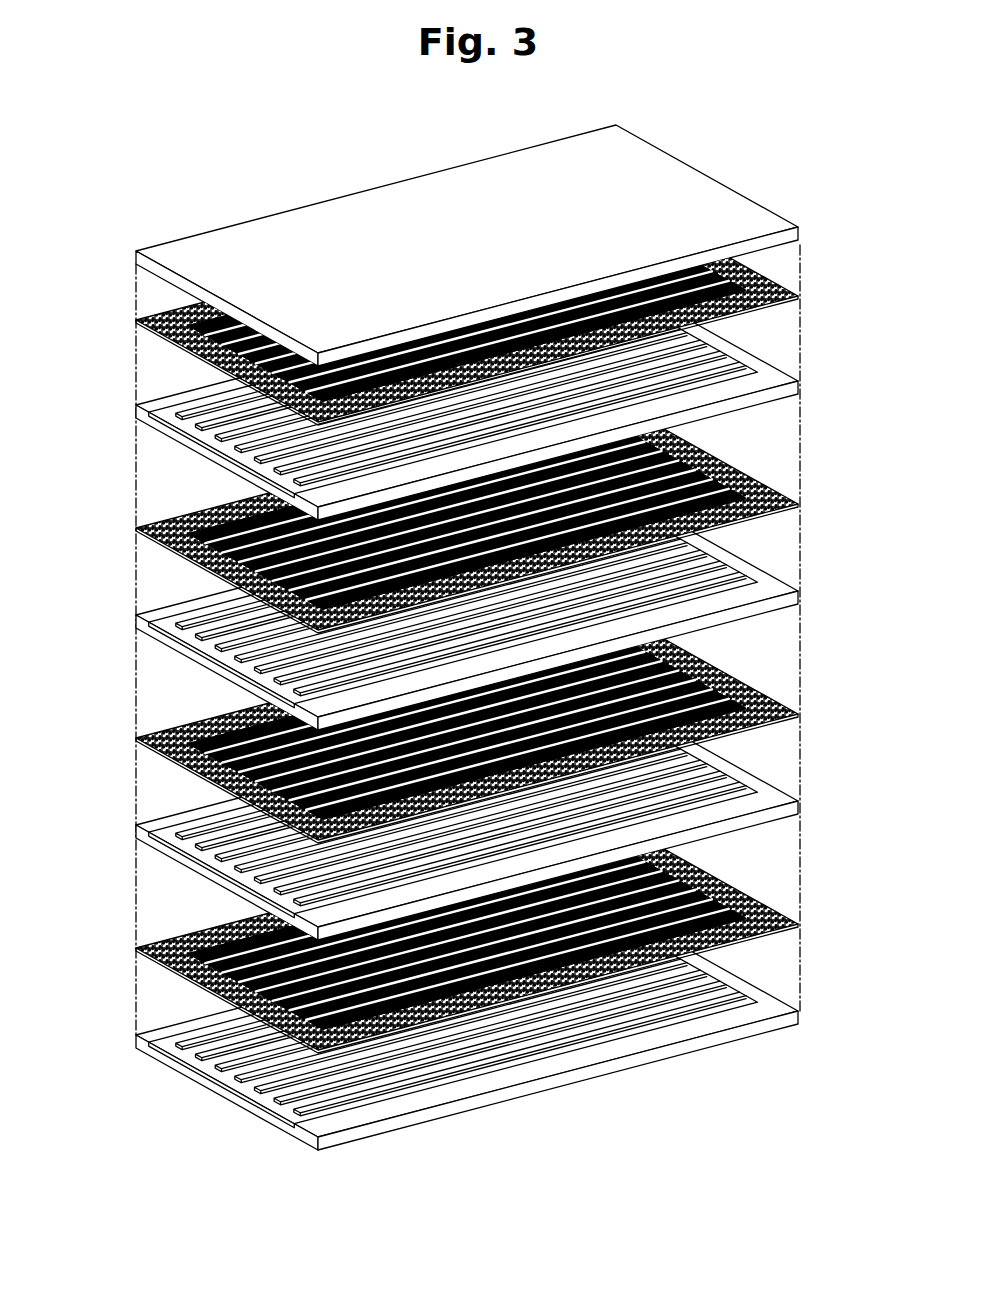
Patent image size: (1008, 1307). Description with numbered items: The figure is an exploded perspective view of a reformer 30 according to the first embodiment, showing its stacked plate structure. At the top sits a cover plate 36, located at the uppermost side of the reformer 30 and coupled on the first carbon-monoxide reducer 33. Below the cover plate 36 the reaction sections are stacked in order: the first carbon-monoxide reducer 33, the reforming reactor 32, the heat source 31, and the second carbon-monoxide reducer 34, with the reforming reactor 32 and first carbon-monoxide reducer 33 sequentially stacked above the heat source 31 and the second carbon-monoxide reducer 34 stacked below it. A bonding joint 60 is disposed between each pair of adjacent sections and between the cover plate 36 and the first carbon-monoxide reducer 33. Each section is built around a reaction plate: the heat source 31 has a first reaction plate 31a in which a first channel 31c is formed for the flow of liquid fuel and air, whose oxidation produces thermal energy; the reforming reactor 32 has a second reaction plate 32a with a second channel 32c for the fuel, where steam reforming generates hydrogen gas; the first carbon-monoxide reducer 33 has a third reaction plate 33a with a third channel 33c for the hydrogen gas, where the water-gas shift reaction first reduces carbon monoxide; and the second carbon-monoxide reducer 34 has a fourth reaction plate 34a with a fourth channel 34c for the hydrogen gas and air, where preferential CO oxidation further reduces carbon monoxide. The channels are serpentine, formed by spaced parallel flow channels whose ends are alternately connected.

The reformer 30 is at (479, 623).
The cover plate 36 is at (128, 246).
The bonding joint 60 is at (776, 269).
The first carbon-monoxide reducer 33 is at (476, 399).
The third reaction plate 33a is at (185, 440).
The third channel 33c is at (545, 424).
The reforming reactor 32 is at (476, 608).
The second reaction plate 32a is at (185, 650).
The second channel 32c is at (545, 634).
The heat source 31 is at (476, 818).
The first reaction plate 31a is at (185, 860).
The first channel 31c is at (545, 844).
The second carbon-monoxide reducer 34 is at (476, 1028).
The fourth reaction plate 34a is at (185, 1070).
The fourth channel 34c is at (545, 1054).